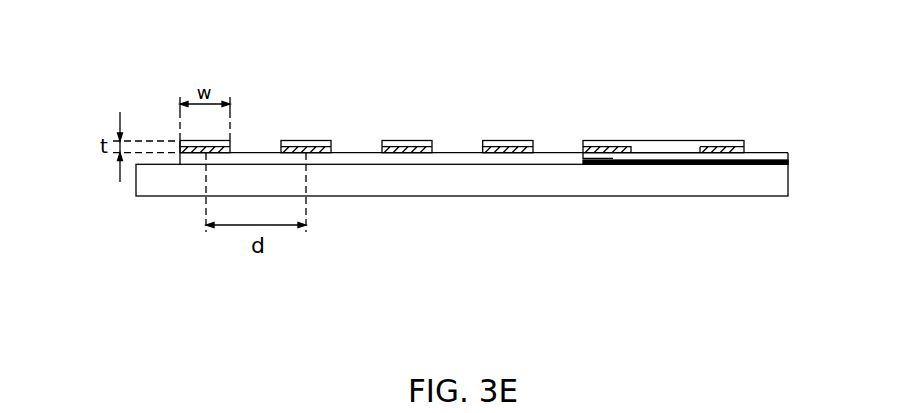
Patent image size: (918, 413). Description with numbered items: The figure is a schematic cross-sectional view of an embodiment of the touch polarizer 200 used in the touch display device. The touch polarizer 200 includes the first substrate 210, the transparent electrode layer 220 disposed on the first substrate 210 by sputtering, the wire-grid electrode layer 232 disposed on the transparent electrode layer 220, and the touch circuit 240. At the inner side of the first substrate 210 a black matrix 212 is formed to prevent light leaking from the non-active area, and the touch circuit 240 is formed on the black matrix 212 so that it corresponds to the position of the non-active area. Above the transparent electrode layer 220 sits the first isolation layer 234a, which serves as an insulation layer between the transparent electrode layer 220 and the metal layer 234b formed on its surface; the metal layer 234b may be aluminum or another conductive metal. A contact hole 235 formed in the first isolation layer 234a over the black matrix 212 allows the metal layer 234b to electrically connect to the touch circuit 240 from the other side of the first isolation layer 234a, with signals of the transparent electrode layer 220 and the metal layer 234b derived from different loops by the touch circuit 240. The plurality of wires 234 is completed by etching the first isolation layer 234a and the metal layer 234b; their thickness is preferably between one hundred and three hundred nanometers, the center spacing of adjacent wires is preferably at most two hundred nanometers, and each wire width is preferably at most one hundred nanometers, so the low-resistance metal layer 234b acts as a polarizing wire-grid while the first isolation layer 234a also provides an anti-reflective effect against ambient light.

The touch polarizer 200 is at (182, 27).
The first substrate 210 is at (139, 180).
The black matrix 212 is at (730, 165).
The transparent electrode layer 220 is at (463, 158).
The wire-grid electrode layer 232 is at (747, 147).
The plurality of wires 234 is at (356, 91).
The first isolation layer 234a is at (413, 148).
The metal layer 234b is at (392, 141).
The contact hole 235 is at (660, 149).
The touch circuit 240 is at (675, 157).